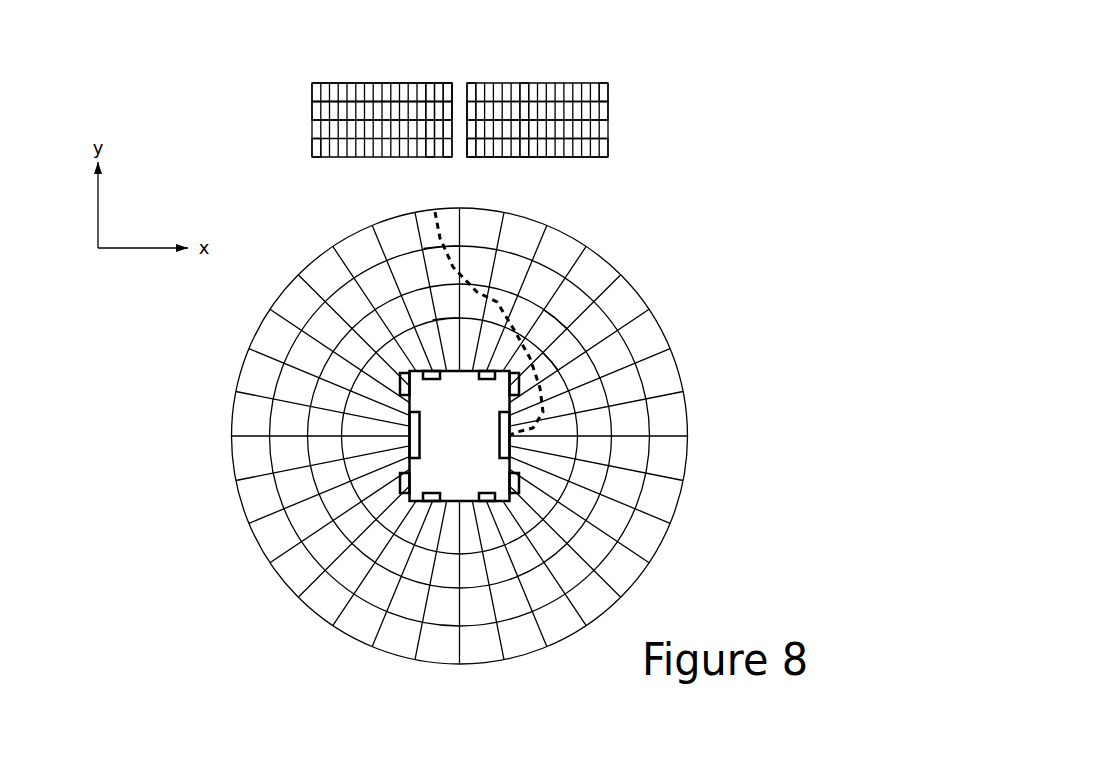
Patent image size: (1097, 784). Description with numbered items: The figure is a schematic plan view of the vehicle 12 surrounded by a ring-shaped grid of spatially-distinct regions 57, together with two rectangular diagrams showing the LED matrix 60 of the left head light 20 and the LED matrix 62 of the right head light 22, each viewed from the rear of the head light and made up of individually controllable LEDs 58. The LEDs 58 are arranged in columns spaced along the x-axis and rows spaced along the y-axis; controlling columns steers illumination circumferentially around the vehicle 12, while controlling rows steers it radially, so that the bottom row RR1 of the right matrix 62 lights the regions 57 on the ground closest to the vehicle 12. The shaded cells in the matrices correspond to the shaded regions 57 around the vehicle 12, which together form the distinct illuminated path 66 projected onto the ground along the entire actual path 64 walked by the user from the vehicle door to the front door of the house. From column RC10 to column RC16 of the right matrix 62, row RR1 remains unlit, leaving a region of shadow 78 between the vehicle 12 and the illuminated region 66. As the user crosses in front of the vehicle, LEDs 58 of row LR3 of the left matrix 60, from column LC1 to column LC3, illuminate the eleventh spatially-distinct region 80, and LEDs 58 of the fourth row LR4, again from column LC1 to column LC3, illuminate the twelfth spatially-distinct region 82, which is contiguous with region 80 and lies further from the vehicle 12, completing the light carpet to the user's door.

The vehicle 12 is at (384, 378).
The left head light 20 is at (345, 82).
The right head light 22 is at (597, 68).
The spatially-distinct regions 57 is at (593, 273).
The LEDs 58 is at (602, 93).
The LED matrix of the left head light 60 is at (313, 143).
The LED matrix of the right head light 62 is at (609, 110).
The actual path 64 is at (523, 347).
The distinct illuminated path 66 is at (552, 305).
The region of shadow 78 is at (446, 326).
The eleventh spatially-distinct region 80 is at (434, 268).
The twelfth spatially-distinct region 82 is at (433, 230).
The fourth row of the left LED matrix LR4 is at (310, 93).
The row LR3 of the left LED matrix LR3 is at (310, 112).
The column LC3 of the left LED matrix LC3 is at (430, 80).
The column LC1 of the left LED matrix LC1 is at (447, 80).
The bottom row of the right LED matrix RR1 is at (610, 147).
The column RC10 of the right LED matrix RC10 is at (525, 163).
The column RC16 of the right LED matrix RC16 is at (472, 160).